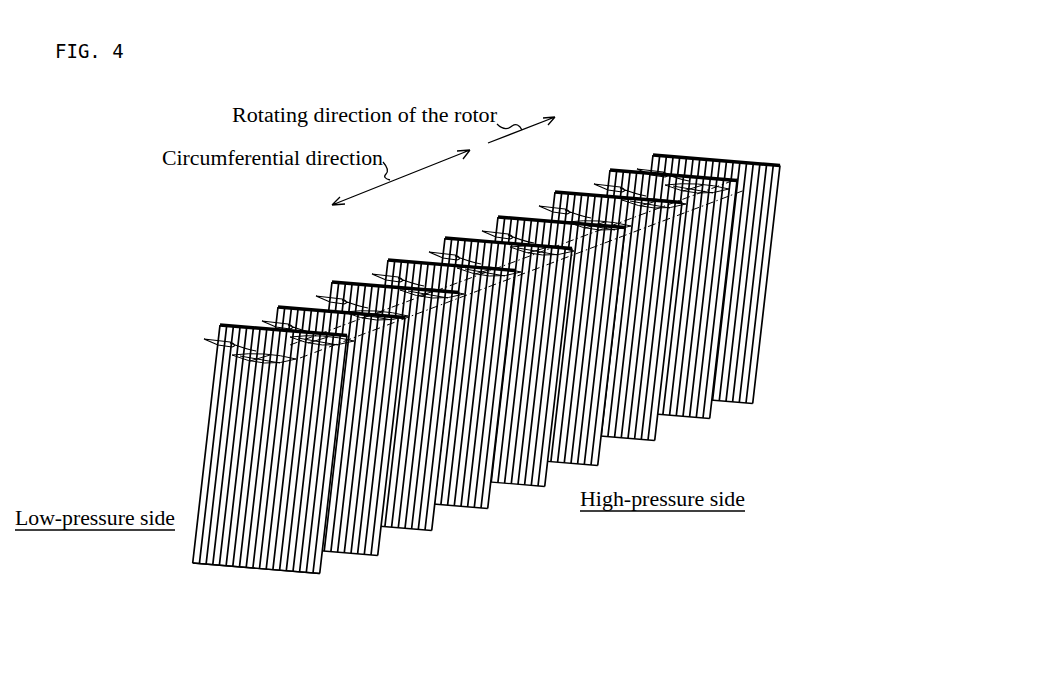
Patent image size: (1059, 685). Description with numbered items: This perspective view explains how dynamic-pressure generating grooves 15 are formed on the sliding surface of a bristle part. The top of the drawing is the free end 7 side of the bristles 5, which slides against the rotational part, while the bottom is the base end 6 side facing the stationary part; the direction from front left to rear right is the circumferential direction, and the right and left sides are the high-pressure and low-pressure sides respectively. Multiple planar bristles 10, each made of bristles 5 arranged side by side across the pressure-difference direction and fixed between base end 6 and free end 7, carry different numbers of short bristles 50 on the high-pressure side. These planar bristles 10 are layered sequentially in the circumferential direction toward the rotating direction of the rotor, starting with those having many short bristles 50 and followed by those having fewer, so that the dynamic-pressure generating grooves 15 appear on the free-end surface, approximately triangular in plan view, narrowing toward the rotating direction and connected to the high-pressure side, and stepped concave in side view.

The bristles 5 is at (441, 250).
The base end 6 is at (196, 565).
The free end 7 is at (666, 152).
The planar bristles 10 is at (658, 151).
The dynamic-pressure generating grooves 15 is at (368, 290).
The short bristles 50 is at (740, 173).